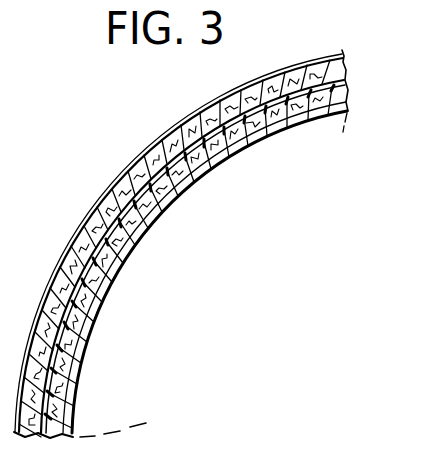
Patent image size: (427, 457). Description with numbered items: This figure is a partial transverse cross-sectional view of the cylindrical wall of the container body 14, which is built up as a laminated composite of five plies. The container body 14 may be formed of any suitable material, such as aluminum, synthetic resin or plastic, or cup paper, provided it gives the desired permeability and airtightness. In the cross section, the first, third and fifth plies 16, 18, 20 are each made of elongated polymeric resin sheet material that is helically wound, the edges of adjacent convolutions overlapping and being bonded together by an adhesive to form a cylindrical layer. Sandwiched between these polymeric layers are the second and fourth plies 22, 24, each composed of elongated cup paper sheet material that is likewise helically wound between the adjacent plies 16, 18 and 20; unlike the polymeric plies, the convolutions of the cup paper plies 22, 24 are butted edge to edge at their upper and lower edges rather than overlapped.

The container body 14 is at (126, 146).
The first ply 16 is at (239, 148).
The third ply 18 is at (167, 130).
The fifth ply 20 is at (113, 185).
The second ply 22 is at (166, 203).
The fourth ply 24 is at (84, 231).